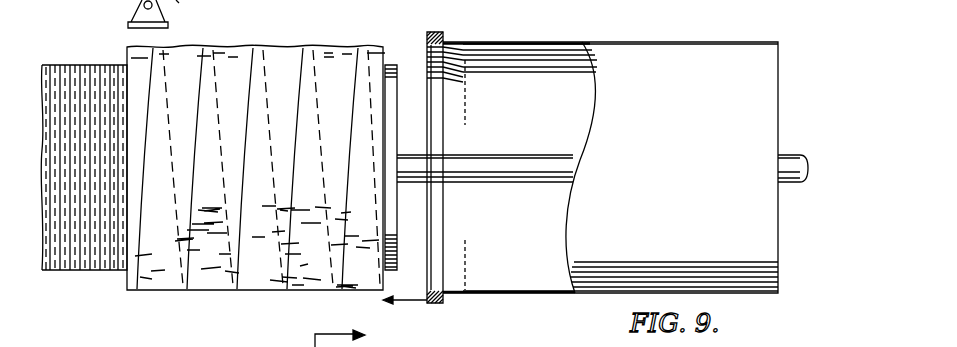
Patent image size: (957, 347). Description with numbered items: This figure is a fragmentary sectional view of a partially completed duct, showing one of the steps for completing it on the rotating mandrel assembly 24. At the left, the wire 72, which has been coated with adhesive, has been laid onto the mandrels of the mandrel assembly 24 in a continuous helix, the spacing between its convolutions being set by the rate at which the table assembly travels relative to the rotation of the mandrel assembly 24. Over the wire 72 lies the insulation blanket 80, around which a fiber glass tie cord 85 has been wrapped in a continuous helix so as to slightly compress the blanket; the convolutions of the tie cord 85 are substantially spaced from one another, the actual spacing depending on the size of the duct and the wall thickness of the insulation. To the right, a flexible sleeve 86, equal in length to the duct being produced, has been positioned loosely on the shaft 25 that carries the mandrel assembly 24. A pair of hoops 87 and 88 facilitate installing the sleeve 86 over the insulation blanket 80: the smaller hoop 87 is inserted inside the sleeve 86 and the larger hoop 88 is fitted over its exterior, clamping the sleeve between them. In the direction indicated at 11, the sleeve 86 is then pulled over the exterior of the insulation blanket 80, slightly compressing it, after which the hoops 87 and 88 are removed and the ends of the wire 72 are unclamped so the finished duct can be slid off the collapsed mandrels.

The section line 11 is at (351, 338).
The mandrel assembly 24 is at (97, 271).
The shaft 25 is at (788, 157).
The wire 72 is at (97, 67).
The insulation blanket 80 is at (256, 152).
The tie cord 85 is at (252, 70).
The flexible sleeve 86 is at (722, 43).
The smaller hoop 87 is at (433, 290).
The larger hoop 88 is at (442, 294).